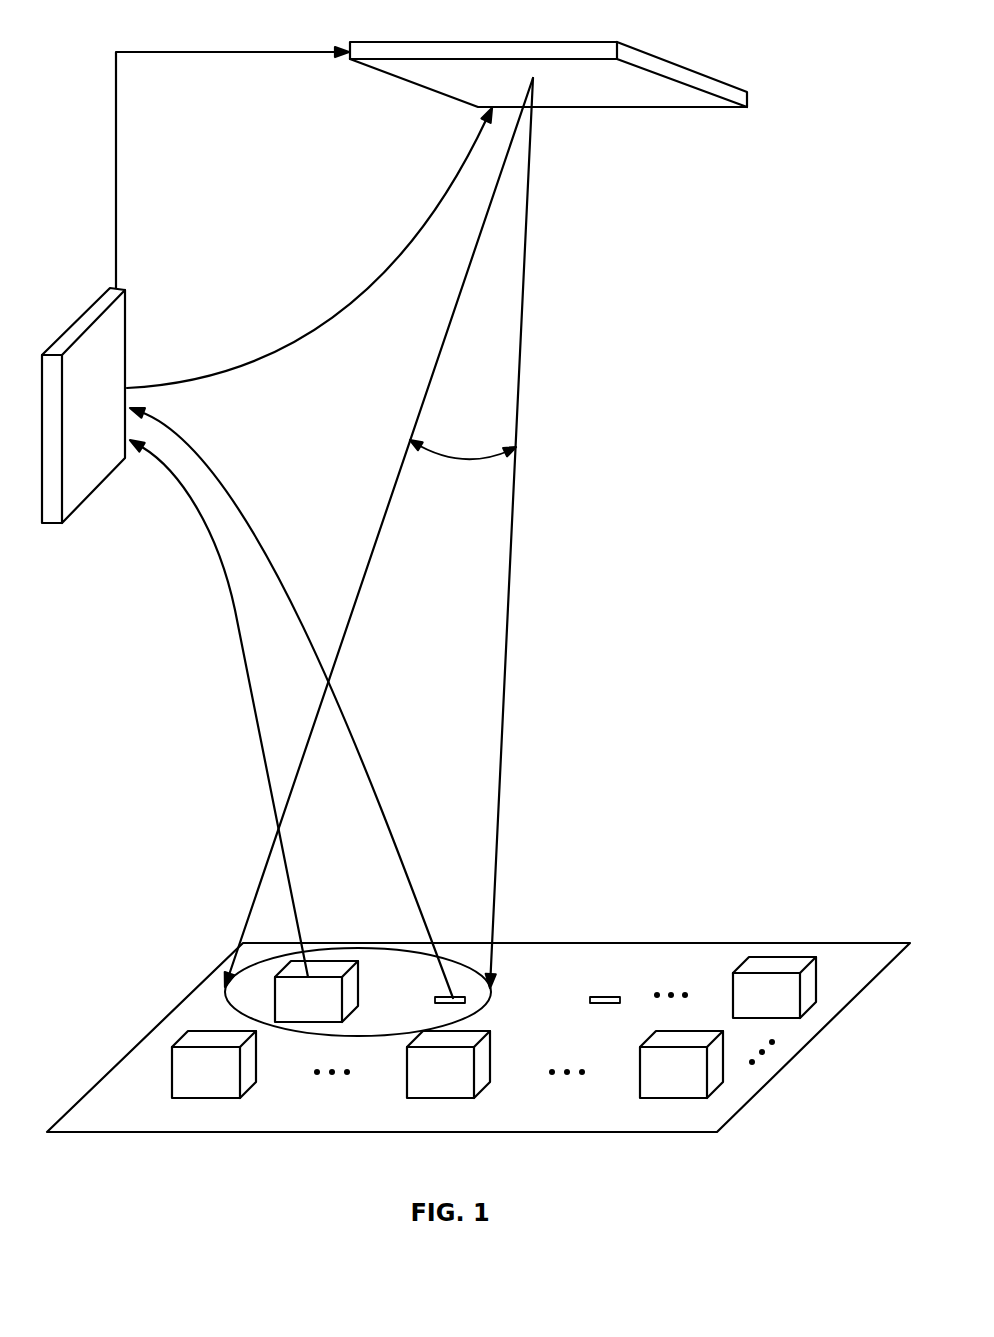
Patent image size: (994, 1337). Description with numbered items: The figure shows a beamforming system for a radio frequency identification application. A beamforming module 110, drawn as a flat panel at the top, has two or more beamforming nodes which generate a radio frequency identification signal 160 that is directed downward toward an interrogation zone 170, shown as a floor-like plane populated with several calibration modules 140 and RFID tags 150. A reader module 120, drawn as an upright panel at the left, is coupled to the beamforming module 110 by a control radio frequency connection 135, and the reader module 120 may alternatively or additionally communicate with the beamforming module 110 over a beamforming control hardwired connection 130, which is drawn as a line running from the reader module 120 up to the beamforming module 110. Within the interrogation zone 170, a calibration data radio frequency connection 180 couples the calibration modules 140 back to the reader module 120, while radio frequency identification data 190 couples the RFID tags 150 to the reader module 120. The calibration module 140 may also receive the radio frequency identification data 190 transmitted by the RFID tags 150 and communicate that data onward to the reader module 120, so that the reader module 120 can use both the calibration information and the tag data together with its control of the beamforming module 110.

The beamforming module 110 is at (548, 74).
The reader module 120 is at (83, 405).
The beamforming control hardwired connection 130 is at (215, 55).
The control radio frequency connection 135 is at (338, 312).
The calibration module 140 is at (494, 1023).
The RFID tag 150 is at (445, 996).
The radio frequency identification signal 160 is at (518, 423).
The interrogation zone 170 is at (478, 1037).
The calibration data radio frequency connection 180 is at (200, 521).
The radio frequency identification data 190 is at (235, 508).